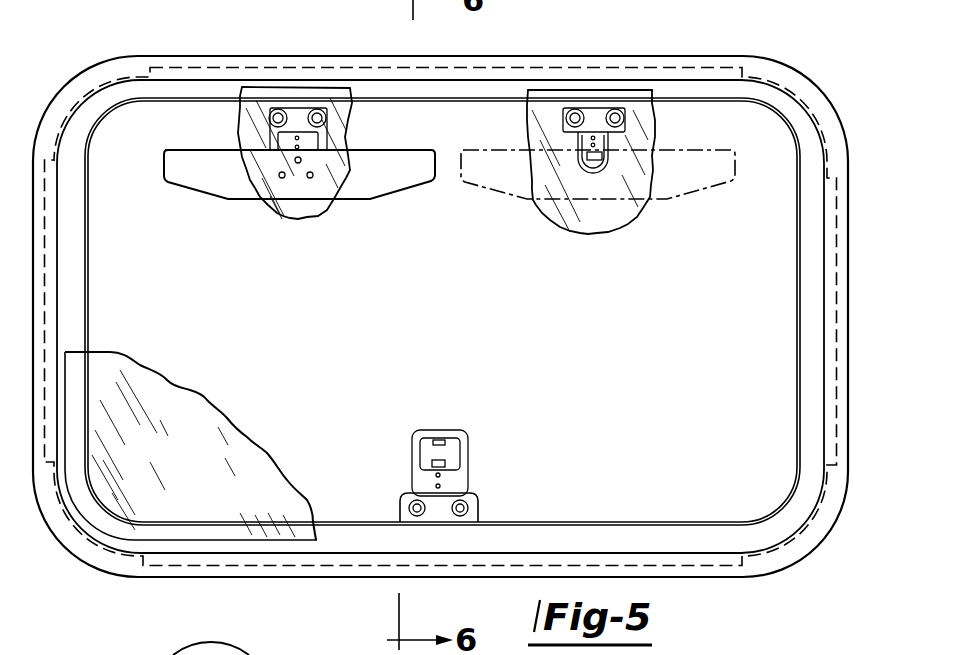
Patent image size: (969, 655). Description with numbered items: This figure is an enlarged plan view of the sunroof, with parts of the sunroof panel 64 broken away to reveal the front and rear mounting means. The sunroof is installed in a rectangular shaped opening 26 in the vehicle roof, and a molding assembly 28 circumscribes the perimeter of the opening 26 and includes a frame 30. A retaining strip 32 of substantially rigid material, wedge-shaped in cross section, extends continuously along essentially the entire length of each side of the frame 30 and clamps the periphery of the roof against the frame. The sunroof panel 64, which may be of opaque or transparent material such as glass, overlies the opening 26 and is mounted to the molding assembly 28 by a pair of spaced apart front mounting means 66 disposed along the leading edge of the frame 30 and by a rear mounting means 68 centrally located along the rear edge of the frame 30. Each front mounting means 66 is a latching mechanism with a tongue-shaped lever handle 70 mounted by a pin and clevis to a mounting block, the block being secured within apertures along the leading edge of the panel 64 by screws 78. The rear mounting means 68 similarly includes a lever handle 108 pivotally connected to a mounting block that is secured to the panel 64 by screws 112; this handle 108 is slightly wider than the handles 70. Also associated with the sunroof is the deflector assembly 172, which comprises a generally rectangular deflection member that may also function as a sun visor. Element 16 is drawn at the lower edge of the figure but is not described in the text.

The hatch cover 16 is at (238, 648).
The opening 26 is at (213, 307).
The molding assembly 28 is at (177, 90).
The frame 30 is at (125, 577).
The retaining strip 32 is at (663, 555).
The sunroof panel 64 is at (302, 210).
The front mounting means 66 is at (400, 275).
The rear mounting means 68 is at (483, 443).
The lever handle 70 is at (603, 166).
The screws 78 is at (618, 112).
The lever handle 108 is at (470, 390).
The screws 112 is at (463, 508).
The deflector assembly 172 is at (508, 182).